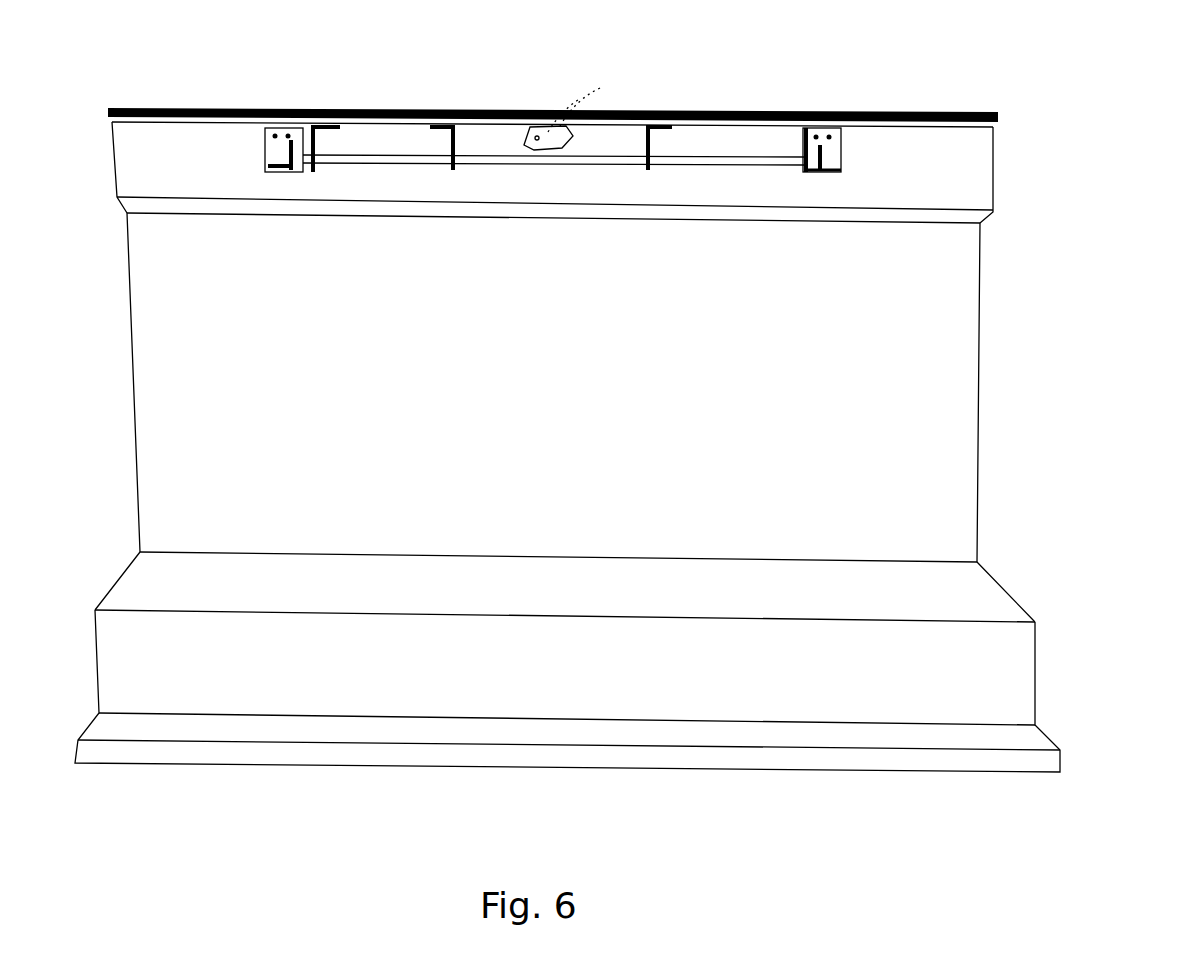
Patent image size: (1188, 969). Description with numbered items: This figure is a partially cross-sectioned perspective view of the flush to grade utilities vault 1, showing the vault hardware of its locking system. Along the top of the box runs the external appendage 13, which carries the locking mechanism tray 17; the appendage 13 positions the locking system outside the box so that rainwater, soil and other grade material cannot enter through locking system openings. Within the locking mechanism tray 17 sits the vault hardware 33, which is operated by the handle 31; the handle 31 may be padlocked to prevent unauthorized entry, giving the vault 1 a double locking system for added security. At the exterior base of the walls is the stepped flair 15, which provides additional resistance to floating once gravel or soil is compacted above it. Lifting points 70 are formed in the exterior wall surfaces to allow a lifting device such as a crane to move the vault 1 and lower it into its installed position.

The flush to grade utilities vault 1 is at (1092, 85).
The external appendage 13 is at (1002, 176).
The stepped flair 15 is at (537, 776).
The locking mechanism tray 17 is at (753, 195).
The handle 31 is at (570, 130).
The vault hardware 33 is at (259, 140).
The lifting points 70 is at (118, 580).